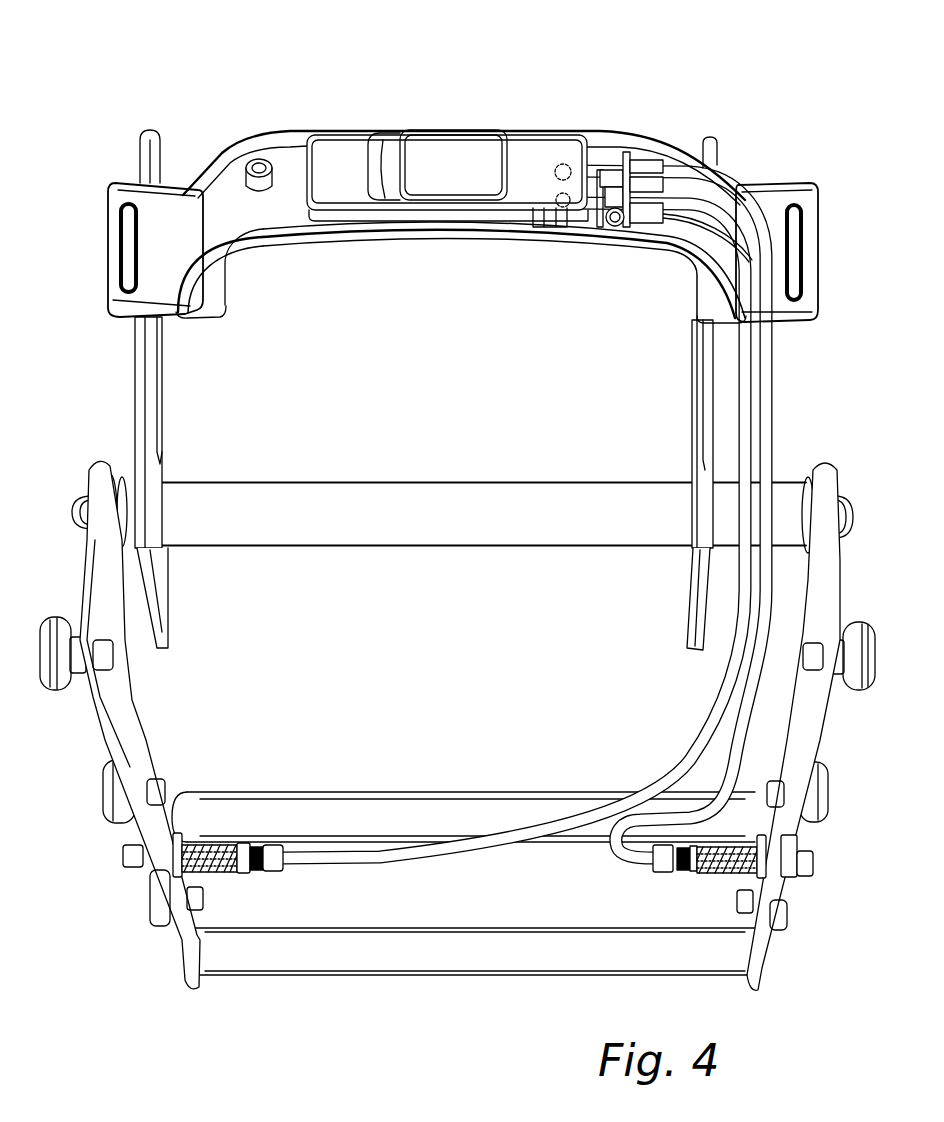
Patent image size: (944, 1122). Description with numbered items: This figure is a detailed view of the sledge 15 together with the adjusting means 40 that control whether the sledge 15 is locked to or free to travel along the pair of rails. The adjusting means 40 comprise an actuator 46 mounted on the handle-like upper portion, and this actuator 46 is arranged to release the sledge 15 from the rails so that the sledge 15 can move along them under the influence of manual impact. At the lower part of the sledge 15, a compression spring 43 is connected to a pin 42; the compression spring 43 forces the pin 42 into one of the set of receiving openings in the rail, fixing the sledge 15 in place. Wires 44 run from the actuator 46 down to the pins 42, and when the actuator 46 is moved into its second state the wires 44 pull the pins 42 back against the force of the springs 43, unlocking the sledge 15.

The sledge 15 is at (804, 616).
The adjusting means 40 is at (543, 131).
The pin 42 is at (804, 866).
The compression spring 43 is at (700, 876).
The wires 44 is at (760, 438).
The actuator 46 is at (447, 168).